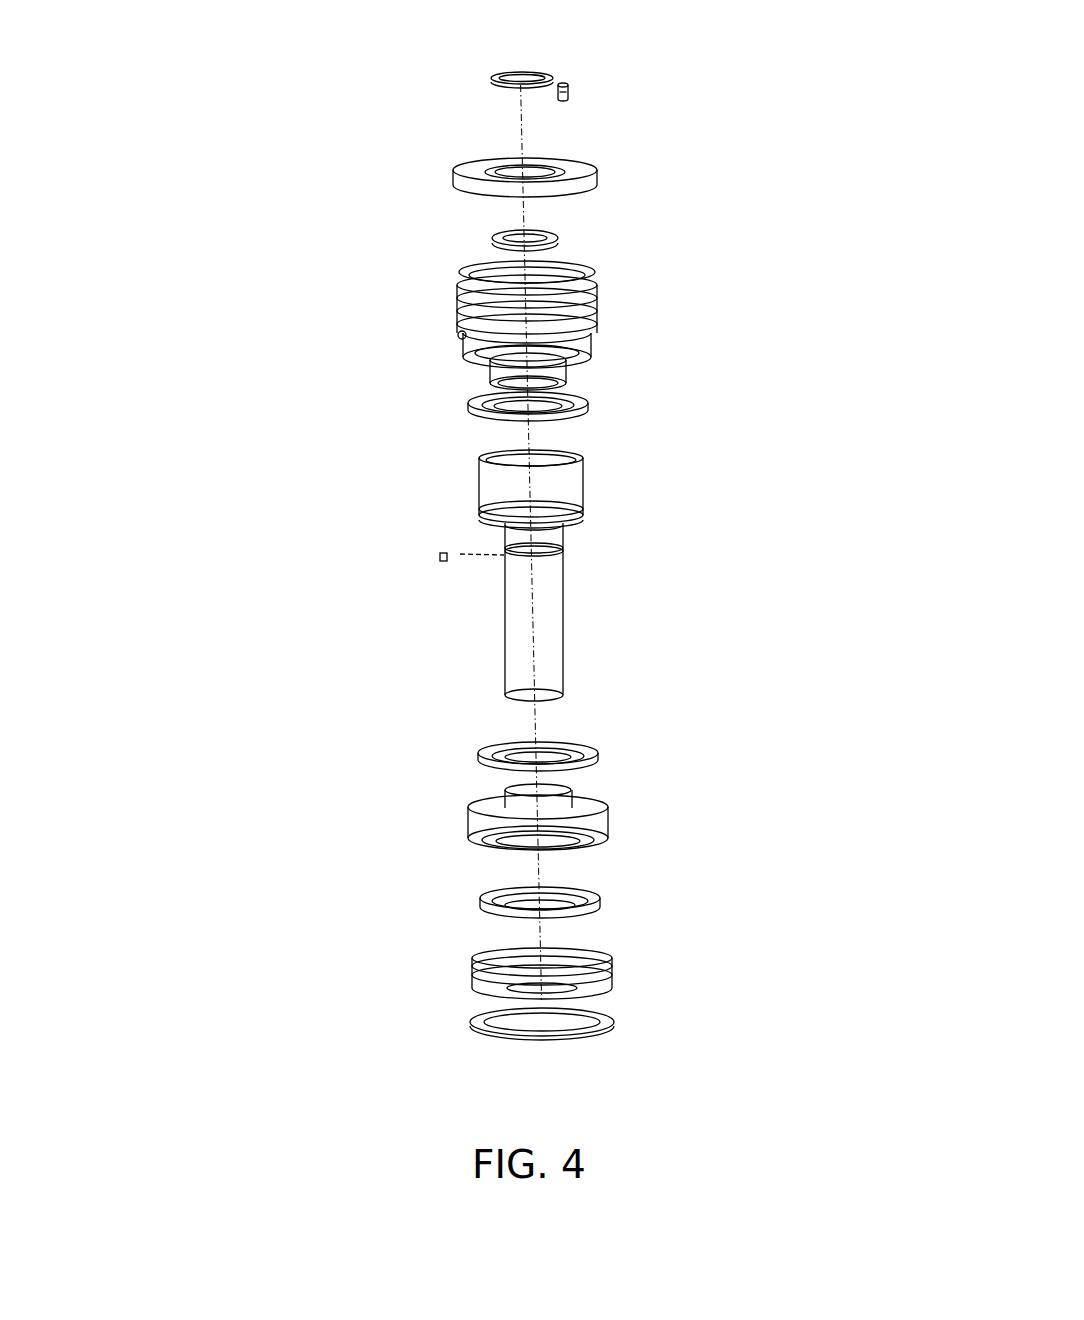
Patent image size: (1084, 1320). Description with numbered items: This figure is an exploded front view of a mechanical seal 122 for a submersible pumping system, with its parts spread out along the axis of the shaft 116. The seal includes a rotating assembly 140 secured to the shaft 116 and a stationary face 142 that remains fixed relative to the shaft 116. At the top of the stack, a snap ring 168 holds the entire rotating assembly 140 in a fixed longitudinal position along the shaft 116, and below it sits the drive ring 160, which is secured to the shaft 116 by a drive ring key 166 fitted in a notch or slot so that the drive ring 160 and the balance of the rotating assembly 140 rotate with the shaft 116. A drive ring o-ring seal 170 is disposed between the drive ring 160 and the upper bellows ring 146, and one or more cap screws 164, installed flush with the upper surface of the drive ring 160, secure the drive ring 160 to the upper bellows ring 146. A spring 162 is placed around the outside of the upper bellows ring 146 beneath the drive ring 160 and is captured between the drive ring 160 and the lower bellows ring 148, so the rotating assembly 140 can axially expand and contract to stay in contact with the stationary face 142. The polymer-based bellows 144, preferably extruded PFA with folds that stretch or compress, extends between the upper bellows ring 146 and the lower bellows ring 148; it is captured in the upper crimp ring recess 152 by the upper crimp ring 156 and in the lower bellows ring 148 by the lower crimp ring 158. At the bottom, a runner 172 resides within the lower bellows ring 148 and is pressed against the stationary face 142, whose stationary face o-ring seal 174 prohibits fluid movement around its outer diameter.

The shaft 116 is at (553, 606).
The mechanical seal 122 is at (200, 225).
The rotating assembly 140 is at (790, 463).
The stationary face 142 is at (612, 958).
The bellows 144 is at (496, 490).
The upper bellows ring 146 is at (465, 345).
The lower bellows ring 148 is at (603, 815).
The upper crimp ring recess 152 is at (573, 357).
The upper crimp ring 156 is at (588, 396).
The lower crimp ring 158 is at (483, 752).
The drive ring 160 is at (593, 168).
The spring 162 is at (590, 272).
The cap screw 164 is at (566, 84).
The drive ring key 166 is at (440, 555).
The snap ring 168 is at (493, 76).
The drive ring o-ring seal 170 is at (495, 237).
The runner 172 is at (483, 898).
The stationary face o-ring seal 174 is at (475, 1020).